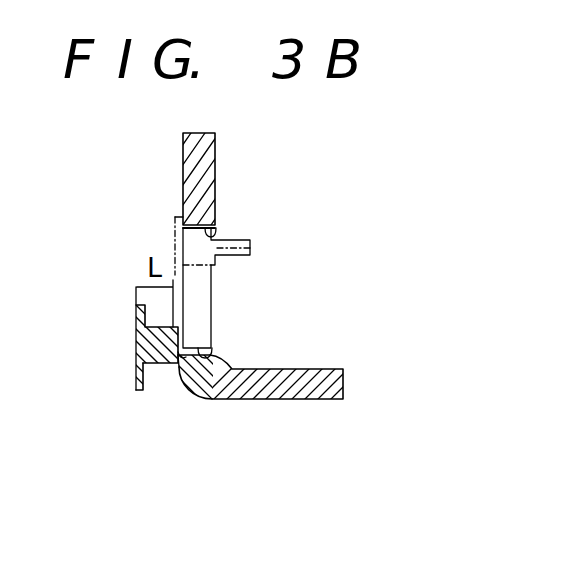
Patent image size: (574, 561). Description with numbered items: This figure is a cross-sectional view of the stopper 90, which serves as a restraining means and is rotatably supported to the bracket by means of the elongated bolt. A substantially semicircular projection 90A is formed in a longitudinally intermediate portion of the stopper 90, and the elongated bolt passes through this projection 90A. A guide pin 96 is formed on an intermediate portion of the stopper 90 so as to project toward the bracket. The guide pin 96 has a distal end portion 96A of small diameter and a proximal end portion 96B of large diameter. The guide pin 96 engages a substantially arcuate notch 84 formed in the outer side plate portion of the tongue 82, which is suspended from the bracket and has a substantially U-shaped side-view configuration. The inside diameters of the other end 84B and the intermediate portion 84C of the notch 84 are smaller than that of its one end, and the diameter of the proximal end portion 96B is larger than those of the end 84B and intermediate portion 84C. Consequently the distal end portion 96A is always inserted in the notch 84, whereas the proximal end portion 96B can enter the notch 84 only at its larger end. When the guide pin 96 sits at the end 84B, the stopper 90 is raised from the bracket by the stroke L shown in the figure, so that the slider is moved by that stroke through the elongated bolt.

The tongue 82 is at (277, 400).
The notch 84 is at (222, 227).
The other end of the notch 84B is at (213, 361).
The intermediate portion of the notch 84C is at (213, 305).
The stopper 90 is at (117, 345).
The projection 90A is at (137, 391).
The guide pin 96 is at (176, 374).
The distal end portion of the guide pin 96A is at (205, 353).
The proximal end portion of the guide pin 96B is at (157, 368).